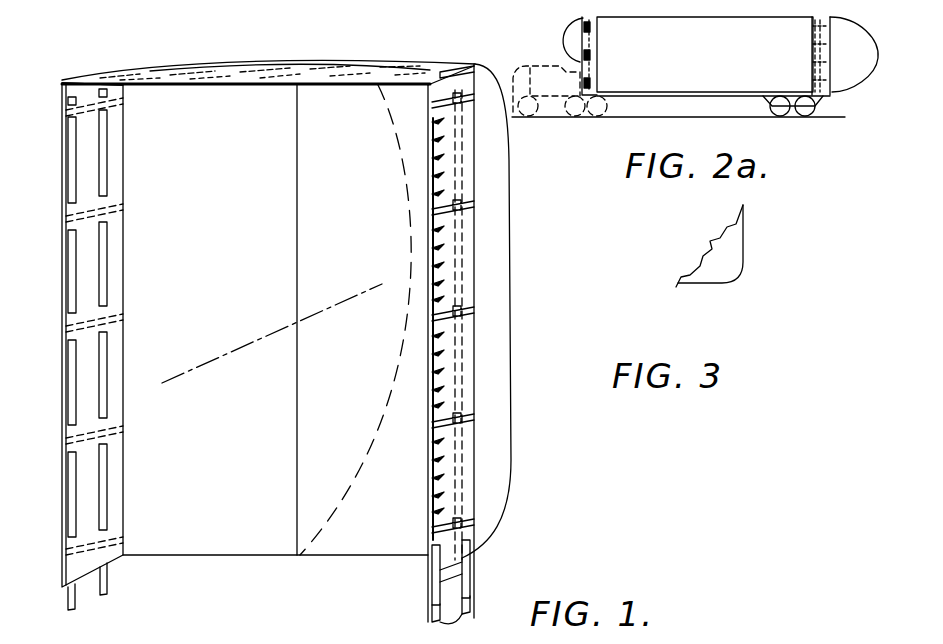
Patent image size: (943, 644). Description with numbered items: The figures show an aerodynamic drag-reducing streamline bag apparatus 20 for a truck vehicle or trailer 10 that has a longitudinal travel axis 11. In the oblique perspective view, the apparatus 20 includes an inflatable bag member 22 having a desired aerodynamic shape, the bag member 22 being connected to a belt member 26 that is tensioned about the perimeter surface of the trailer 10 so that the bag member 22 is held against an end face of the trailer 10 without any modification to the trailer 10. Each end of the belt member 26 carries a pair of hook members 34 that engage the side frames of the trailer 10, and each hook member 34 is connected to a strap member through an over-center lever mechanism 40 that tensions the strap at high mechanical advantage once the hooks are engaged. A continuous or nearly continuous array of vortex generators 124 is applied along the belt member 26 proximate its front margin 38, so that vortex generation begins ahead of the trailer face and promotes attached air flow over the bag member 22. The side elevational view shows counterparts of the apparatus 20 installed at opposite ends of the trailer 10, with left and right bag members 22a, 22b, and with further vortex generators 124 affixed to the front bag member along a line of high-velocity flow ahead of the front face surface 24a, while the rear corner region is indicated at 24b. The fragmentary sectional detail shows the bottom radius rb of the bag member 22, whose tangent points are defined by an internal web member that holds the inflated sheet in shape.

In FIG. 2a, the trailer 10 is at (718, 72).
In FIG. 1, the longitudinal travel axis 11 is at (188, 370).
In FIG. 1, the streamline bag apparatus 20 is at (530, 538).
In FIG. 1, the bag member 22 is at (511, 437).
In FIG. 3, the bag member 22 is at (744, 240).
In FIG. 1, the left bag member 22a is at (447, 36).
In FIG. 2a, the left bag member 22a is at (566, 36).
In FIG. 1, the right bag member 22b is at (238, 66).
In FIG. 2a, the right bag member 22b is at (838, 92).
In FIG. 2a, the face surface 24a is at (533, 81).
In FIG. 2a, the rear corner post 24b is at (838, 48).
In FIG. 1, the belt member 26 is at (124, 256).
In FIG. 1, the hook members 34 is at (70, 606).
In FIG. 1, the front margin 38 is at (62, 470).
In FIG. 1, the over-center lever mechanism 40 is at (428, 580).
In FIG. 1, the vortex generators 124 is at (248, 86).
In FIG. 2a, the vortex generators 124 is at (598, 32).
In FIG. 3, the bottom radius rb is at (742, 279).